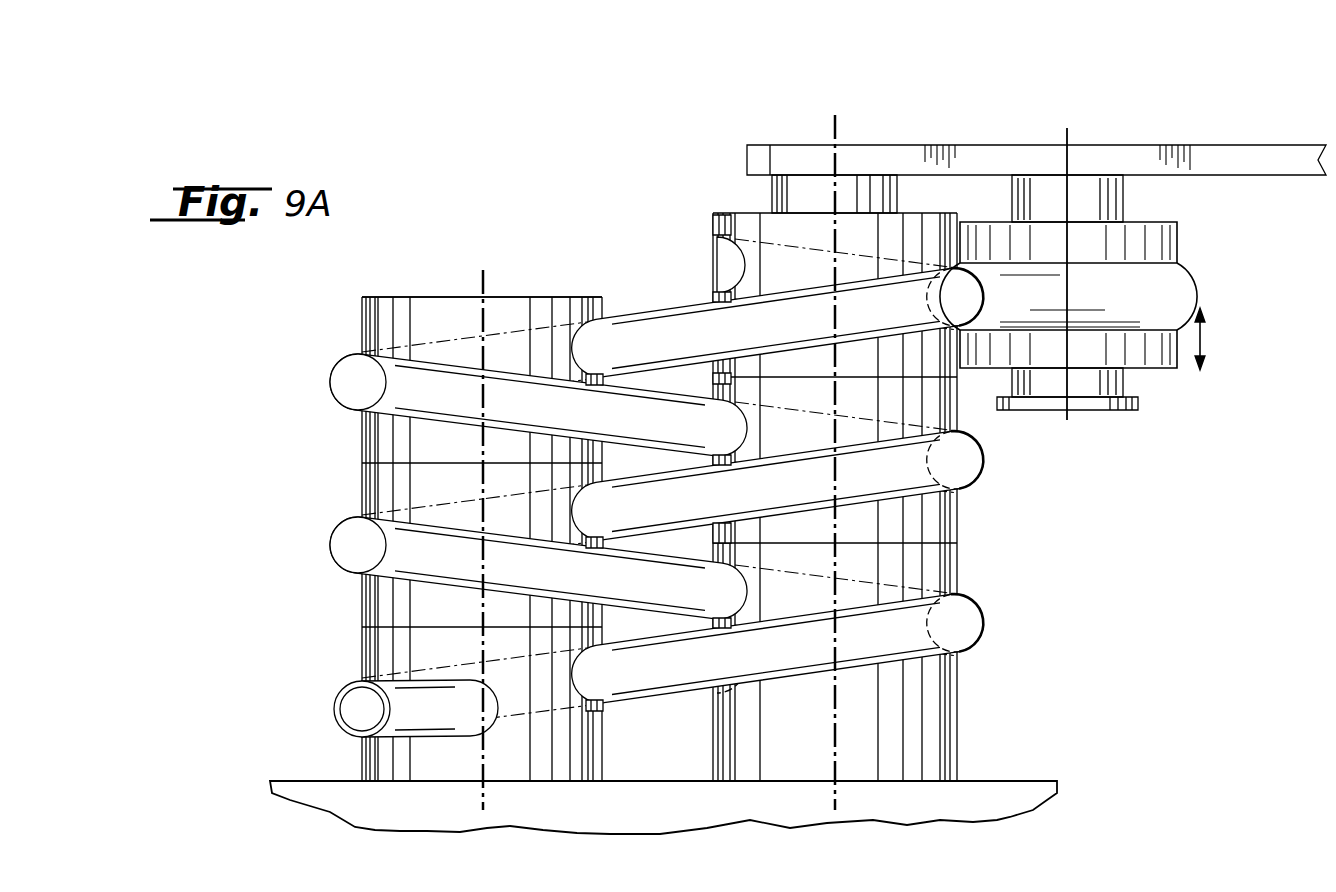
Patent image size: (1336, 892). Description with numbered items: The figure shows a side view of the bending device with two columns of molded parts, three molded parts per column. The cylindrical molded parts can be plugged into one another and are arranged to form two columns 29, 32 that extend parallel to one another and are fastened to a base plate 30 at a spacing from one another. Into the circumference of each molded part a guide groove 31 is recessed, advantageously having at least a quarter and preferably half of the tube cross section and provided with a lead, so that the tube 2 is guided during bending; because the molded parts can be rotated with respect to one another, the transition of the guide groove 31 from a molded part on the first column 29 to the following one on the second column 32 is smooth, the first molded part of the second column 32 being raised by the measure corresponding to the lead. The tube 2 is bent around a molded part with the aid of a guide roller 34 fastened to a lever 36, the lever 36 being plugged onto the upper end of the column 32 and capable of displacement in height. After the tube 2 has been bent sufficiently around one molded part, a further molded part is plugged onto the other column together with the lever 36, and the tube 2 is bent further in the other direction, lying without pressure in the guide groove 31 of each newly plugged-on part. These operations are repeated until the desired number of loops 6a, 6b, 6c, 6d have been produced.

The tube 2 is at (655, 328).
The loop 6a is at (335, 715).
The loop 6b is at (982, 615).
The loop 6c is at (345, 548).
The loop 6d is at (982, 470).
The column 29 is at (547, 231).
The base plate 30 is at (1024, 790).
The guide groove 31 is at (715, 242).
The column 32 is at (888, 122).
The guide roller 34 is at (1172, 240).
The lever 36 is at (1190, 158).